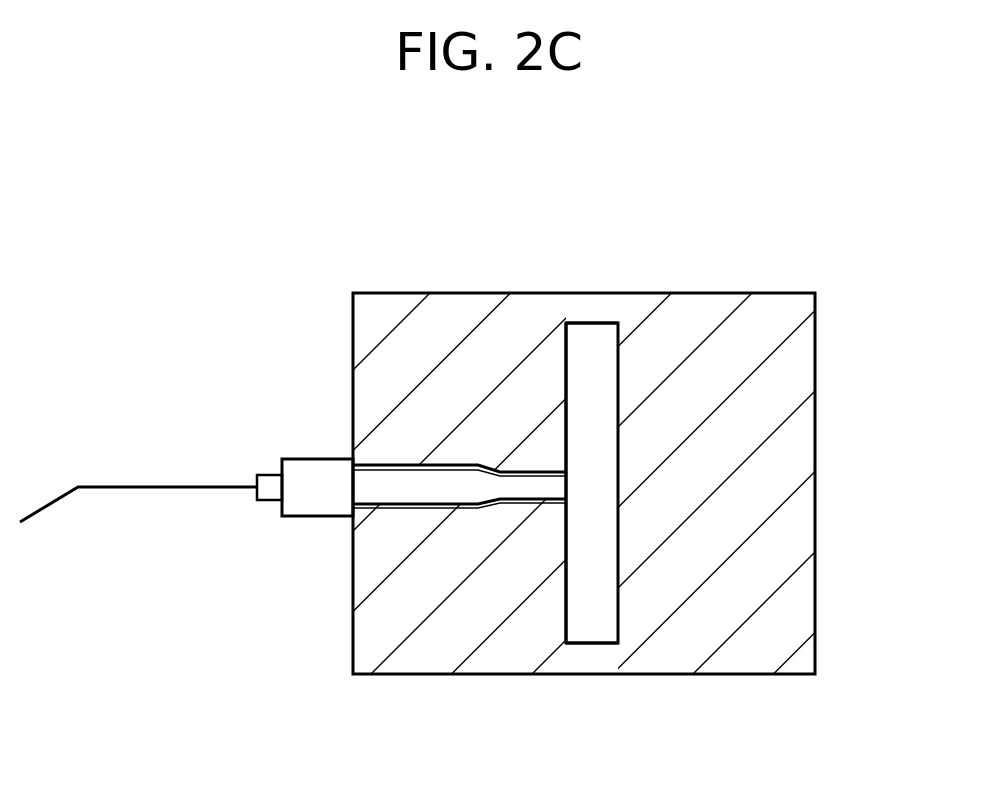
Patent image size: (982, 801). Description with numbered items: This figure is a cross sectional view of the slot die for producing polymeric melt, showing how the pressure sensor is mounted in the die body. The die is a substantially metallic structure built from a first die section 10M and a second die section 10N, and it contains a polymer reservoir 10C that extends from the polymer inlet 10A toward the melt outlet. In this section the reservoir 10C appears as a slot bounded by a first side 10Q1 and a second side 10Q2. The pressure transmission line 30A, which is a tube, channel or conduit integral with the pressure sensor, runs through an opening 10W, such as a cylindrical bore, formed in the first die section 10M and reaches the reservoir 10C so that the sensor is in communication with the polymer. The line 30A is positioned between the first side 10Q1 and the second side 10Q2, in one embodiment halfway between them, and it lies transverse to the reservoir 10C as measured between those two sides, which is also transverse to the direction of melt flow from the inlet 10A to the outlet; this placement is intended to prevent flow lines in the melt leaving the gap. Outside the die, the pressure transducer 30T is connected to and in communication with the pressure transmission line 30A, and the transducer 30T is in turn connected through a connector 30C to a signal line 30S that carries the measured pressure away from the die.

The first side 10Q1 is at (592, 323).
The second side 10Q2 is at (584, 643).
The polymer inlet 10A is at (592, 392).
The opening 10W is at (466, 465).
The first die section 10M is at (413, 419).
The second die section 10N is at (703, 385).
The polymer reservoir 10C is at (585, 492).
The pressure transmission line 30A is at (500, 487).
The pressure transducer 30T is at (317, 490).
The connector 30C is at (265, 475).
The signal line 30S is at (47, 503).